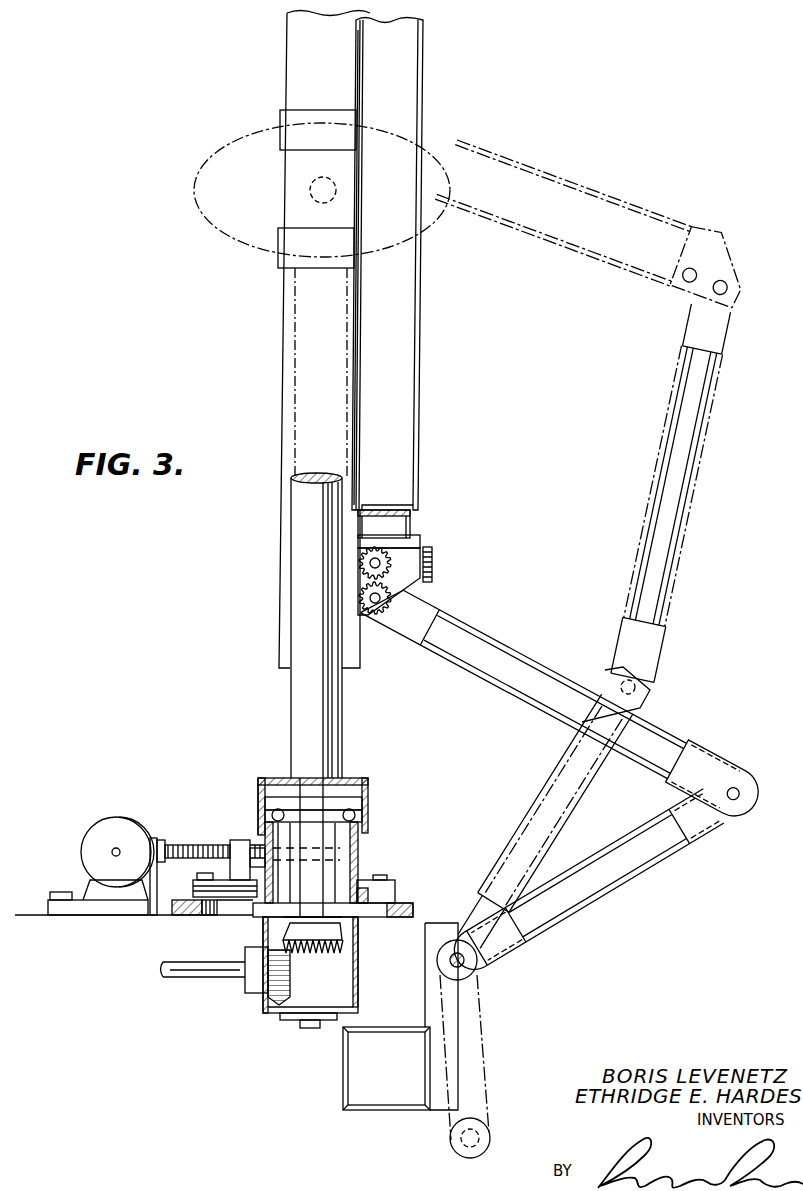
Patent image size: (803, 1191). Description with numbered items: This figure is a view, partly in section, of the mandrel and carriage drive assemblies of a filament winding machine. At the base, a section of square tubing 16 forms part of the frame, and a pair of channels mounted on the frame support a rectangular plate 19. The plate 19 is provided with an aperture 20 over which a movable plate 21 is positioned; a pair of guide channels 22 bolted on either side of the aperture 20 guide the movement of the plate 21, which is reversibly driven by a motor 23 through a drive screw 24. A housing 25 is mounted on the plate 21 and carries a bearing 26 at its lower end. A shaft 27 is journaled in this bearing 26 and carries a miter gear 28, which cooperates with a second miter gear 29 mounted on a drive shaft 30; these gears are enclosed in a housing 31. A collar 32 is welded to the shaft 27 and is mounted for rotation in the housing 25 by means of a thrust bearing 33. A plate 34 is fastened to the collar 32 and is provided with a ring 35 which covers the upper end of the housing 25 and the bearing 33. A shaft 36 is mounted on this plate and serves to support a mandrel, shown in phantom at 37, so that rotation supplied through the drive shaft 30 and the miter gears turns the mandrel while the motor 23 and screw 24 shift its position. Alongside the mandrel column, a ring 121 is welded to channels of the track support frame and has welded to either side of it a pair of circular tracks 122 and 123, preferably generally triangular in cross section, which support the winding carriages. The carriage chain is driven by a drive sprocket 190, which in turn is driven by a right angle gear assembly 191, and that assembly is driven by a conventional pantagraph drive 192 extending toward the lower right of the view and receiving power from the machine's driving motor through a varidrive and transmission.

The square tubing 16 is at (342, 1076).
The rectangular plate 19 is at (405, 912).
The aperture 20 is at (385, 920).
The movable plate 21 is at (357, 890).
The guide channels 22 is at (196, 890).
The motor 23 is at (96, 832).
The drive screw 24 is at (174, 843).
The housing 25 is at (338, 896).
The bearing 26 is at (368, 892).
The shaft 27 is at (307, 837).
The miter gear 28 is at (340, 955).
The second miter gear 29 is at (262, 1000).
The drive shaft 30 is at (200, 979).
The housing 31 is at (358, 1008).
The collar 32 is at (350, 796).
The thrust bearing 33 is at (352, 812).
The plate 34 is at (350, 780).
The ring 35 is at (262, 791).
The shaft 36 is at (342, 734).
The mandrel 37 is at (223, 232).
The ring 121 is at (412, 527).
The circular track 122 is at (421, 362).
The circular track 123 is at (352, 447).
The drive sprocket 190 is at (425, 594).
The right angle gear assembly 191 is at (434, 553).
The pantagraph drive 192 is at (497, 641).